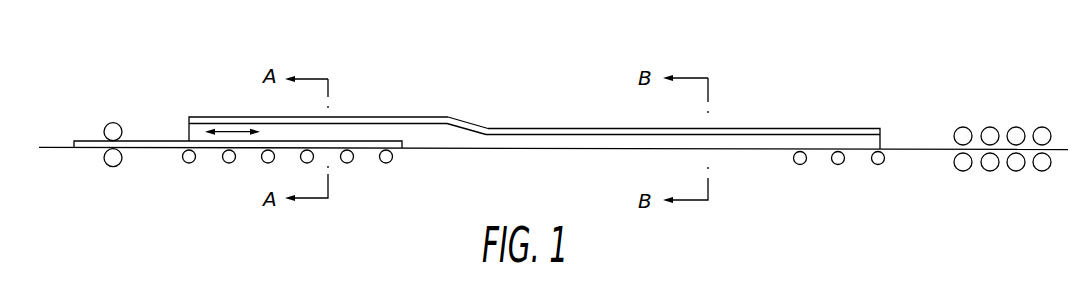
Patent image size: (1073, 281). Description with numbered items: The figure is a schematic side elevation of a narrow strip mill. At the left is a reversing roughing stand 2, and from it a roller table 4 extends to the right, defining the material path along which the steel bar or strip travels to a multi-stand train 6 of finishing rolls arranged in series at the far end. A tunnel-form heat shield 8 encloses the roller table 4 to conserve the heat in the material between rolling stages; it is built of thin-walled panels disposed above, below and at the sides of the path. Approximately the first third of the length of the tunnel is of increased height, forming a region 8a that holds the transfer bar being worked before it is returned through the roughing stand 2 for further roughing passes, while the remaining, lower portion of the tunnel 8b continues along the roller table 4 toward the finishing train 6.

The reversing roughing stand 2 is at (110, 166).
The roller table 4 is at (393, 163).
The multi-stand train of finishing rolls 6 is at (998, 172).
The tunnel-form heat shield 8 is at (534, 85).
The region of increased height 8a is at (363, 117).
The thin portion of strip 8b is at (747, 128).